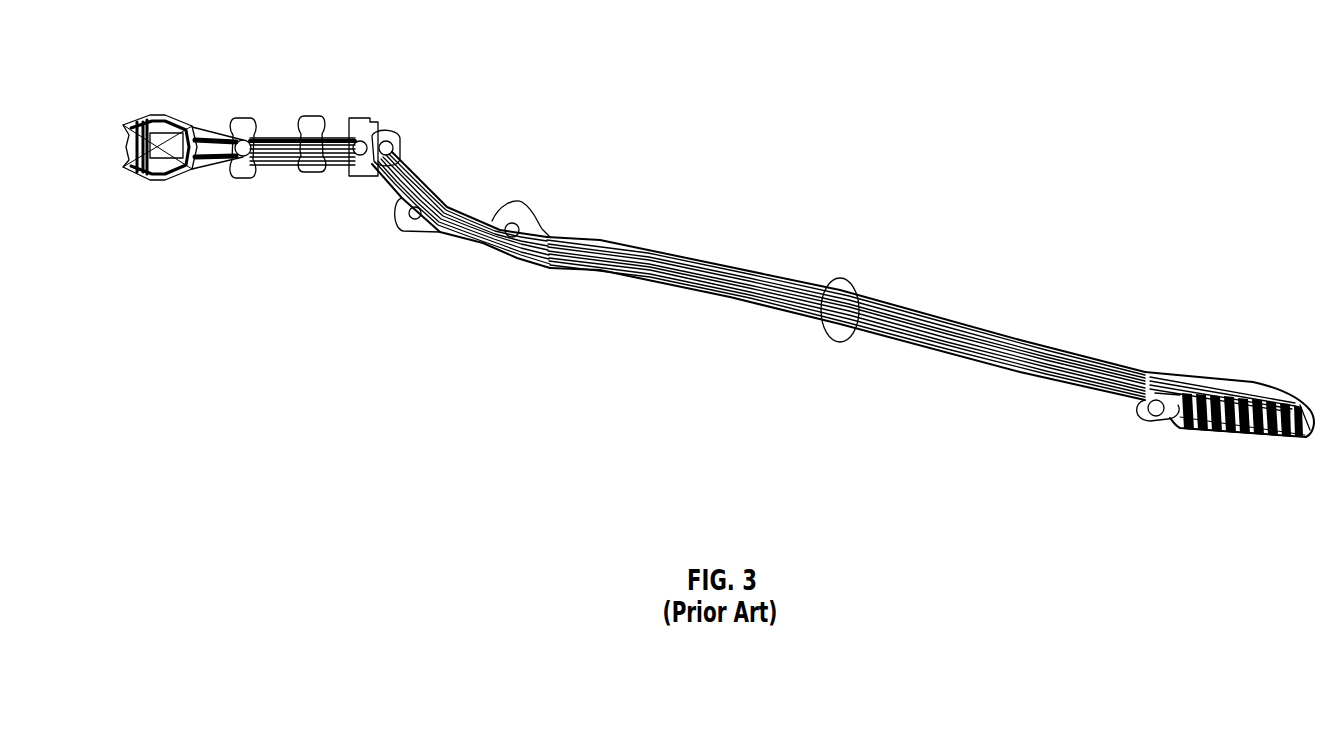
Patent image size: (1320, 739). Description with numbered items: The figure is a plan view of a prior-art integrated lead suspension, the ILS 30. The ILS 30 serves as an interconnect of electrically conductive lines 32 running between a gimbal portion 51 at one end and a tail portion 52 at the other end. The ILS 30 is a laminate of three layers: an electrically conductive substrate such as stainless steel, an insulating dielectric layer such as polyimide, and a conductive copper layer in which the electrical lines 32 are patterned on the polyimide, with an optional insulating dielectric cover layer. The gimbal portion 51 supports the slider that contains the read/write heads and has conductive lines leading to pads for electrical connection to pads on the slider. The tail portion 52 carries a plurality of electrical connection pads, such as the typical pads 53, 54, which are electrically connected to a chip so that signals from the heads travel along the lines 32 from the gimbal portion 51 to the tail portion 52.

The integrated lead suspension (ILS) 30 is at (820, 156).
The electrically conductive lines 32 is at (852, 288).
The gimbal portion 51 is at (183, 110).
The tail portion 52 is at (1314, 353).
The electrical connection pad 53 is at (1185, 421).
The electrical connection pad 54 is at (1202, 429).